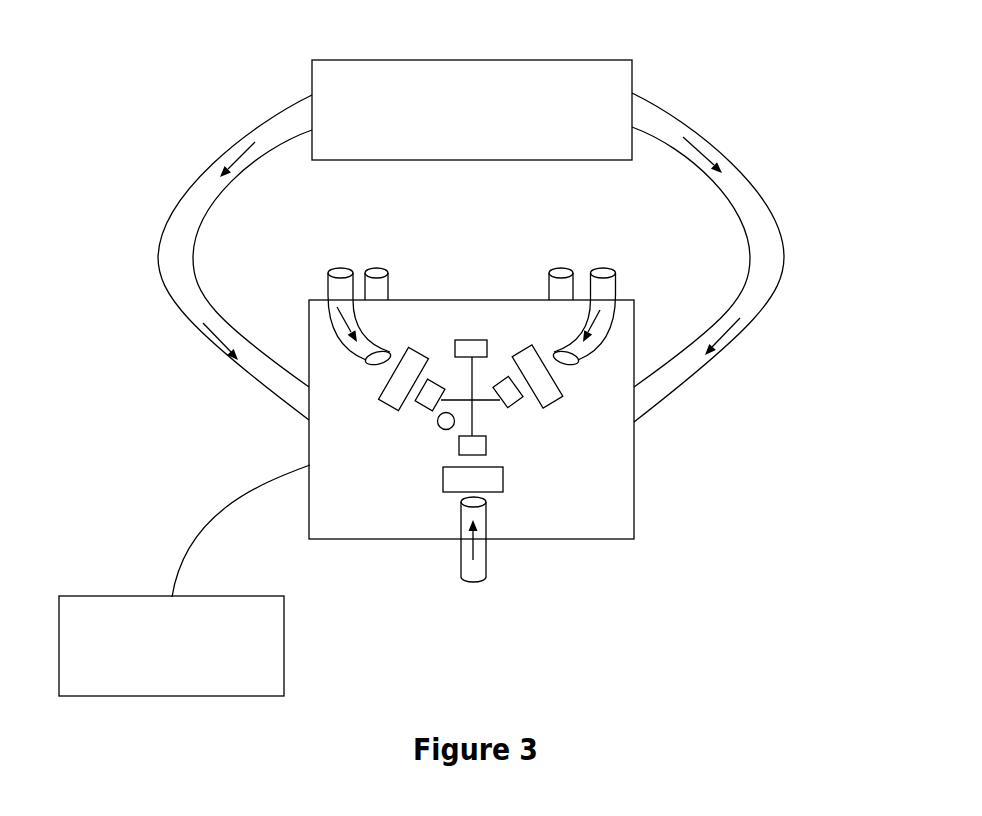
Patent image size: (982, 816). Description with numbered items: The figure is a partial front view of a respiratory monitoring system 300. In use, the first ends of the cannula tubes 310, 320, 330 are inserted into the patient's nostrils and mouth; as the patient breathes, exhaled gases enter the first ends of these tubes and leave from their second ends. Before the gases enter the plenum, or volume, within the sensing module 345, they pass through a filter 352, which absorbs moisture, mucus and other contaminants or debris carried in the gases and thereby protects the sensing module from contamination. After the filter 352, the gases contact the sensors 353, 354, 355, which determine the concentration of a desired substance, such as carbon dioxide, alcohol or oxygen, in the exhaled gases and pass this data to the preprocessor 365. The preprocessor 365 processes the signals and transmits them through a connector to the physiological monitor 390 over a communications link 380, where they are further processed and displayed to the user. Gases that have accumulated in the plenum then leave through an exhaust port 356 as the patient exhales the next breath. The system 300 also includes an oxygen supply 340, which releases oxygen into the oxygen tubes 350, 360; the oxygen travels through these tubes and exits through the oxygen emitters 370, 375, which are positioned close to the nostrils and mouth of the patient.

The respiratory monitoring system 300 is at (795, 99).
The cannula tube 310 is at (327, 290).
The cannula tube 320 is at (615, 287).
The cannula tube 330 is at (488, 560).
The oxygen supply 340 is at (472, 60).
The sensing module 345 is at (635, 477).
The oxygen tube 350 is at (668, 112).
The filter 352 is at (382, 402).
The sensor 353 is at (487, 442).
The sensor 354 is at (517, 407).
The sensor 355 is at (428, 408).
The exhaust port 356 is at (442, 427).
The oxygen tube 360 is at (262, 122).
The preprocessor 365 is at (461, 339).
The oxygen emitter 370 is at (380, 270).
The oxygen emitter 375 is at (559, 269).
The communications link 380 is at (238, 500).
The physiological monitor 390 is at (87, 595).